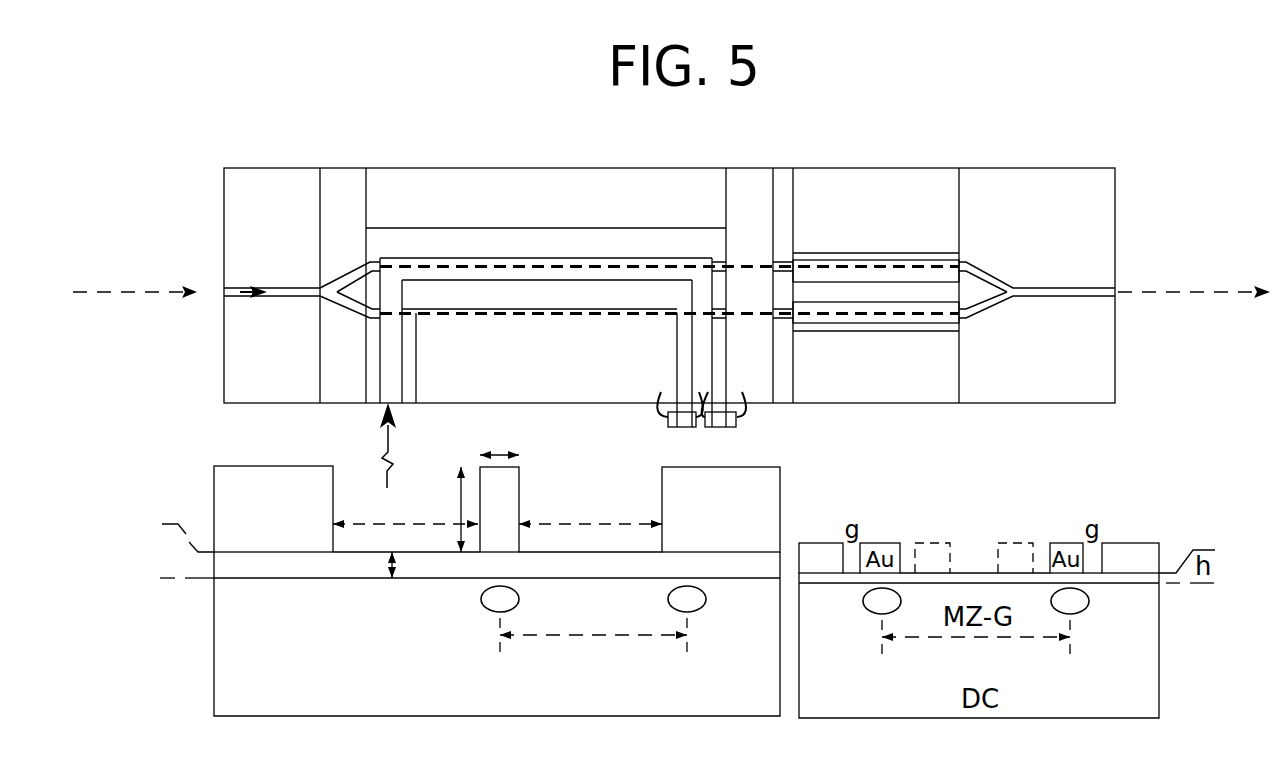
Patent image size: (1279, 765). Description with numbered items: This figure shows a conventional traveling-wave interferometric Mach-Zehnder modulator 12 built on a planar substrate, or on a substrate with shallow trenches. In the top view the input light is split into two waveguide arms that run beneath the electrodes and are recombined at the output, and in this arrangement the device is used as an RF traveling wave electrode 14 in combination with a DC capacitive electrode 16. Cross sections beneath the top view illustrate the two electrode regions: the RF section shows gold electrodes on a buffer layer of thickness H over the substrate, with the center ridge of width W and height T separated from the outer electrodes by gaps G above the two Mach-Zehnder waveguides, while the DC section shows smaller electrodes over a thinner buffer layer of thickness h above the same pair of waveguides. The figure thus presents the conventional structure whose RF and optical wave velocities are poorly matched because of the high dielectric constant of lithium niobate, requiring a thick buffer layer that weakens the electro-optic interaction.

The TW interferometric MZ modulator 12 is at (210, 222).
The RF traveling wave electrode 14 is at (206, 471).
The DC capacitive electrode 16 is at (1128, 387).